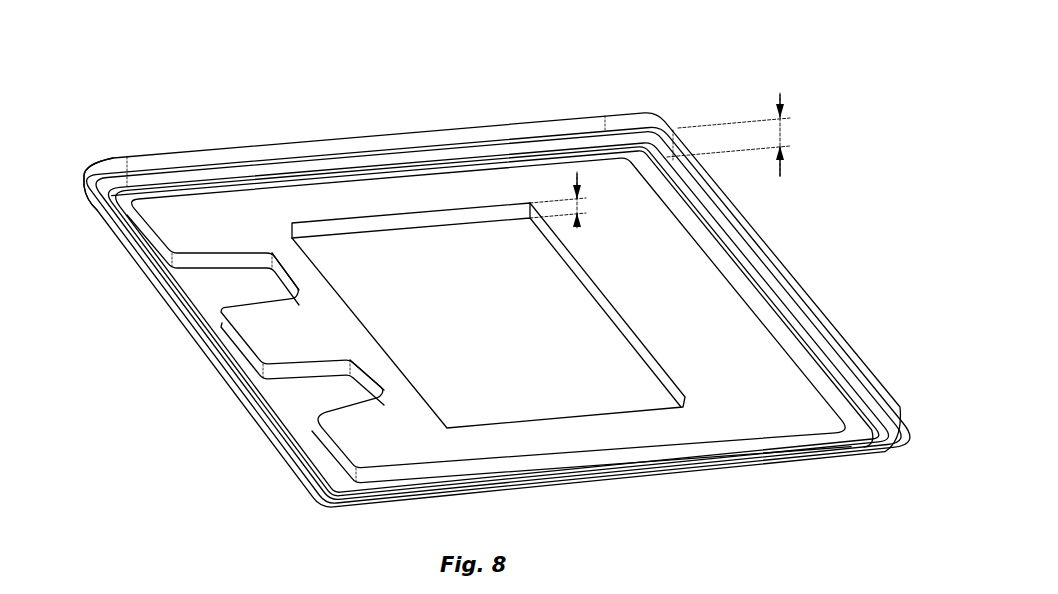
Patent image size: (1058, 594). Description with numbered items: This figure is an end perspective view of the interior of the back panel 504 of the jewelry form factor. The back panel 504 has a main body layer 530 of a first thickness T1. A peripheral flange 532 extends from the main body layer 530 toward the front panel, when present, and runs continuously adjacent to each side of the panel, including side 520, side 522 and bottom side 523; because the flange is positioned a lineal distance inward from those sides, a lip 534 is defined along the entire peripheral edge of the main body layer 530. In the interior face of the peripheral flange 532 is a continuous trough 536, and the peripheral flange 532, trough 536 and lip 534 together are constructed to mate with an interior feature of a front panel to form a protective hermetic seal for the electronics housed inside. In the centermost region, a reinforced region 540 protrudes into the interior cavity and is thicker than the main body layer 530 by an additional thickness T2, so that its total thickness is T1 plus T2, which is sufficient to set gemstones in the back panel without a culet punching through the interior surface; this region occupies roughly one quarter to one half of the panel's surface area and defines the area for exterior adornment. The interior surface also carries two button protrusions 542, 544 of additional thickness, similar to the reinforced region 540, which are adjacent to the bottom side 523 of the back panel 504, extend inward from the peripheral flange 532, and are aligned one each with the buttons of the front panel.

The back panel 504 is at (206, 109).
The side 520 is at (553, 118).
The side 522 is at (846, 288).
The bottom side 523 is at (79, 175).
The main body layer 530 is at (750, 406).
The peripheral flange 532 is at (297, 163).
The lip 534 is at (412, 144).
The trough 536 is at (276, 427).
The reinforced region 540 is at (600, 389).
The button protrusion 542 is at (300, 271).
The button protrusion 544 is at (388, 382).
The first thickness T1 is at (792, 133).
The additional thickness T2 is at (588, 206).